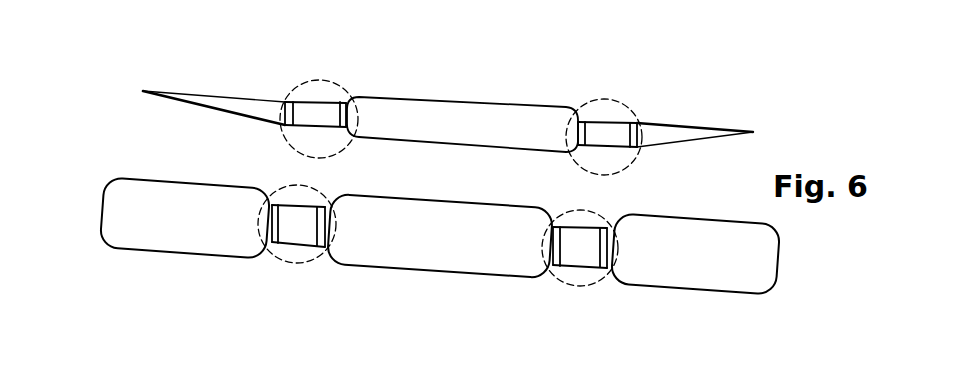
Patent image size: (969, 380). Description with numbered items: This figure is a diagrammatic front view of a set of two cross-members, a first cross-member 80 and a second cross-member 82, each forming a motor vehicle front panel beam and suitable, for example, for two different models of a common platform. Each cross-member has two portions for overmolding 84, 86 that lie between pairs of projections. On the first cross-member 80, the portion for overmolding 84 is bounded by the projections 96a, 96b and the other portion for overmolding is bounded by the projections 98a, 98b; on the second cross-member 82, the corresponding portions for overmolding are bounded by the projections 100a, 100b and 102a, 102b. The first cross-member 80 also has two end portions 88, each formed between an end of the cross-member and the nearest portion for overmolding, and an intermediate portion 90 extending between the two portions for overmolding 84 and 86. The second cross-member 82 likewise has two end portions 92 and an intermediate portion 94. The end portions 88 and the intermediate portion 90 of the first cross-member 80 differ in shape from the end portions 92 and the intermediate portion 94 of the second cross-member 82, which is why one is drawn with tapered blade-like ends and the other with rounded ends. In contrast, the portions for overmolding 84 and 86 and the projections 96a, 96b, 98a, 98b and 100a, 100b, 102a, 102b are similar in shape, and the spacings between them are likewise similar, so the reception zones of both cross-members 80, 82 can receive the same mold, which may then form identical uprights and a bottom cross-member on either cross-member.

The first cross-member 80 is at (216, 86).
The second cross-member 82 is at (96, 174).
The portion for overmolding 84 is at (318, 80).
The portion for overmolding 86 is at (301, 261).
The end portion 88 is at (238, 107).
The intermediate portion 90 is at (462, 112).
The end portion 92 is at (179, 240).
The intermediate portion 94 is at (445, 266).
The projection 96a is at (292, 102).
The projection 96b is at (343, 103).
The projection 98a is at (583, 122).
The projection 98b is at (637, 123).
The projection 100a is at (270, 244).
The projection 100b is at (318, 248).
The projection 102a is at (552, 276).
The projection 102b is at (603, 272).